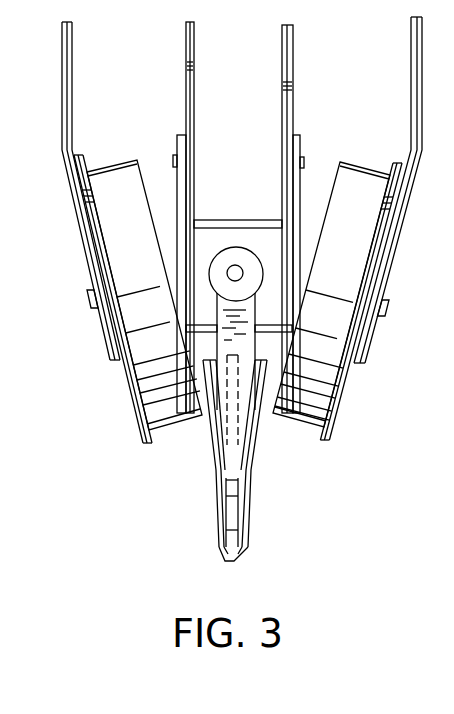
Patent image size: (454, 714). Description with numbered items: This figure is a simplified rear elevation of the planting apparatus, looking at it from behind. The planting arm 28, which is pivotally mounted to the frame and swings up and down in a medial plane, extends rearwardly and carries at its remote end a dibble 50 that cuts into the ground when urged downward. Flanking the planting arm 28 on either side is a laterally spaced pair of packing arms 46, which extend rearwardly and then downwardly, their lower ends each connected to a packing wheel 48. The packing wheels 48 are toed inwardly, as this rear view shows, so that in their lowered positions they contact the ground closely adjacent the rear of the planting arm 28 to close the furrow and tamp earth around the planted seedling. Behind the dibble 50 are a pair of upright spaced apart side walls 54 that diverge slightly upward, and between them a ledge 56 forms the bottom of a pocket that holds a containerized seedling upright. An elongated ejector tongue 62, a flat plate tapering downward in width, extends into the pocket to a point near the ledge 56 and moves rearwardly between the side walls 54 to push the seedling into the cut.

The planting arm 28 is at (344, 110).
The packing arms 46 is at (408, 124).
The packing wheels 48 is at (322, 373).
The dibble 50 is at (240, 549).
The side walls 54 is at (217, 492).
The ledge 56 is at (233, 492).
The ejector tongue 62 is at (235, 418).